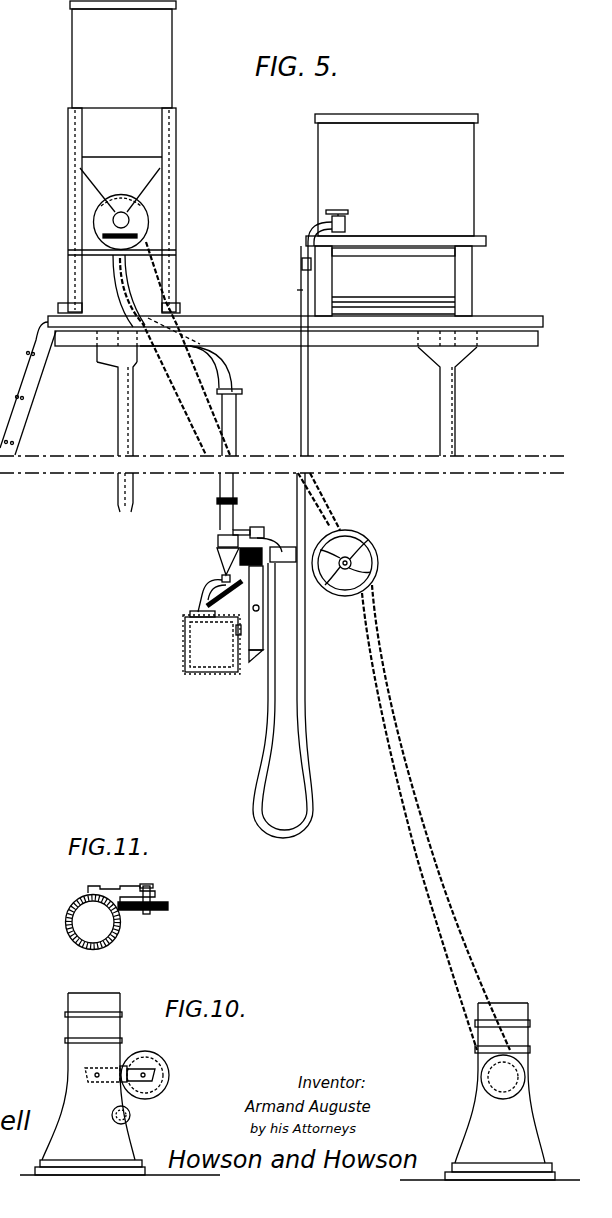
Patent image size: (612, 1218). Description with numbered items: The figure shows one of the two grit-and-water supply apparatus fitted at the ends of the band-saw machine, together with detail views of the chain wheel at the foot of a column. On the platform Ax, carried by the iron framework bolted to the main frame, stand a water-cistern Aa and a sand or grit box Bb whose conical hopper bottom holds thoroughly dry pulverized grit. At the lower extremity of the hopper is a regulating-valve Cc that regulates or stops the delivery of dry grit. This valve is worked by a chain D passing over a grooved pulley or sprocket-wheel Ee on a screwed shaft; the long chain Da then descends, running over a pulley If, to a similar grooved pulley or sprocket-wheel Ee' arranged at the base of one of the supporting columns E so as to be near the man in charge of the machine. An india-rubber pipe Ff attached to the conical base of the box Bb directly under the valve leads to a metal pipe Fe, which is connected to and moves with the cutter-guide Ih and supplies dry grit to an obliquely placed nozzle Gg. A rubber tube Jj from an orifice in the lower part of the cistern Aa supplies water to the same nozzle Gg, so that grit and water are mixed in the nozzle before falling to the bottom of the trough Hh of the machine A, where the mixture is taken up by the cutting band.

In FIG. 5, the sand or grit box Bb is at (119, 157).
In FIG. 5, the water-cistern Aa is at (396, 215).
In FIG. 5, the grooved pulley or sprocket-wheel Ee is at (121, 212).
In FIG. 5, the regulating-valve Cc is at (121, 220).
In FIG. 5, the chain D is at (187, 348).
In FIG. 5, the india-rubber pipe Ff is at (159, 355).
In FIG. 5, the platform Ax is at (283, 409).
In FIG. 5, the rubber tube Jj is at (292, 530).
In FIG. 5, the metal pipe Fe is at (197, 464).
In FIG. 5, the cutter-guide Ih is at (268, 586).
In FIG. 5, the pulley If is at (338, 534).
In FIG. 5, the nozzle Gg is at (222, 596).
In FIG. 5, the receptacle A is at (201, 644).
In FIG. 5, the trough Hh is at (213, 641).
In FIG. 5, the long chain Da is at (436, 817).
In FIG. 5, the supporting column E is at (490, 1083).
In FIG. 11, the supporting column E is at (93, 922).
In FIG. 10, the supporting column E is at (120, 1084).
In FIG. 5, the grooved pulley or sprocket-wheel Ee' is at (503, 1077).
In FIG. 11, the grooved pulley or sprocket-wheel Ee' is at (139, 899).
In FIG. 10, the grooved pulley or sprocket-wheel Ee' is at (127, 1068).